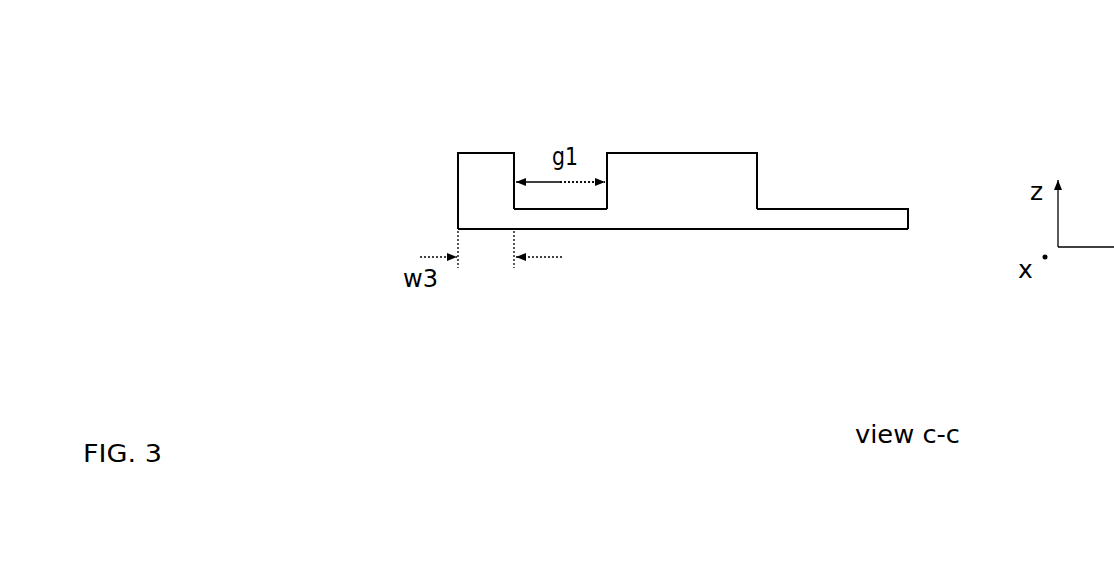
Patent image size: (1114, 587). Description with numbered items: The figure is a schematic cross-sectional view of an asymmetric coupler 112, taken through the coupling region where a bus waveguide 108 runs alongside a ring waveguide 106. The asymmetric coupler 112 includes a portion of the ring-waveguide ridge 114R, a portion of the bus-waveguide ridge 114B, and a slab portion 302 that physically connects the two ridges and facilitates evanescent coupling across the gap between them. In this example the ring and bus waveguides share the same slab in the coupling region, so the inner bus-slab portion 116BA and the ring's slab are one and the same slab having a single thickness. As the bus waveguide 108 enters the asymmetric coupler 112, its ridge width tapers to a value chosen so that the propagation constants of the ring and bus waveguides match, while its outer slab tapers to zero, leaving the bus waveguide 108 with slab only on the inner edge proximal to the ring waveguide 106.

The asymmetric coupler 112 is at (495, 122).
The bus-waveguide ridge 114B is at (487, 177).
The ring-waveguide ridge 114R is at (772, 103).
The slab portion 302 is at (567, 217).
The ring waveguide 106 is at (723, 275).
The inner bus-slab portion 116BA is at (818, 240).
The bus waveguide 108 is at (463, 293).